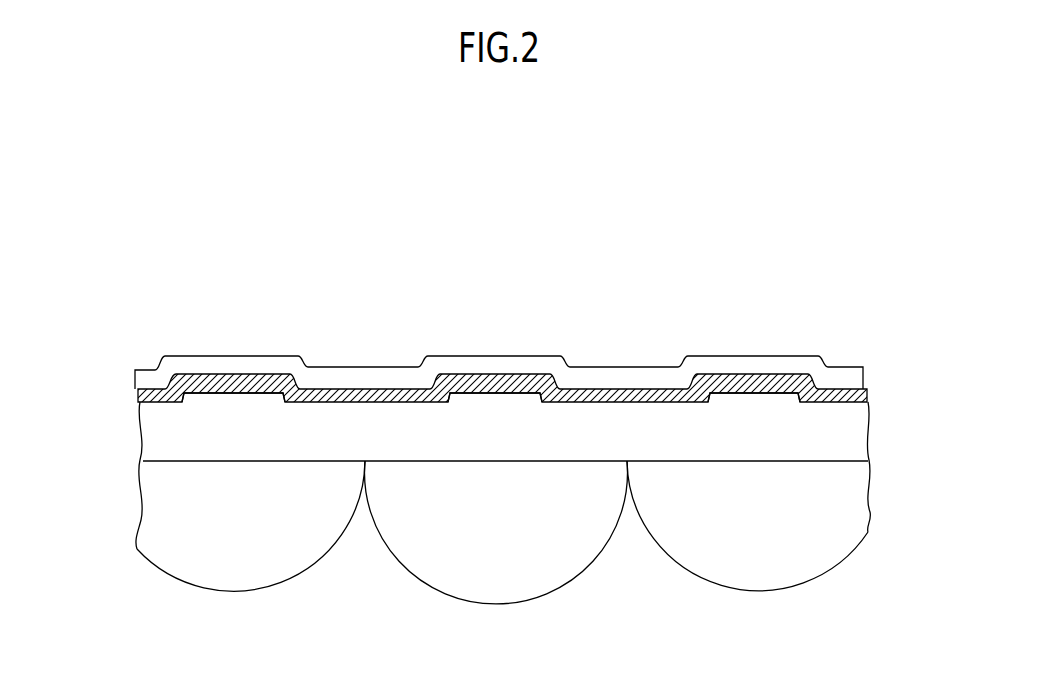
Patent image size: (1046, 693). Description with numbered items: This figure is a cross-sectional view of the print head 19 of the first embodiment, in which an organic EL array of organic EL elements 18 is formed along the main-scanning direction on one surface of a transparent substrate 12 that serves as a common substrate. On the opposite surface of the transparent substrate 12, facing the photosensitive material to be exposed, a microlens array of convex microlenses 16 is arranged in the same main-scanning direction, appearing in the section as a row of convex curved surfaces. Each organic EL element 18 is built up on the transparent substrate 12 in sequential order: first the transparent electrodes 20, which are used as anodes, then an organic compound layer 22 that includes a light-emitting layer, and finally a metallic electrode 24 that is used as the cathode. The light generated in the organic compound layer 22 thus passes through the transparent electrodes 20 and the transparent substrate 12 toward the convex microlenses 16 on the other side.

The transparent substrate 12 is at (143, 453).
The convex microlenses 16 is at (422, 555).
The organic EL element 18 is at (237, 354).
The print head 19 is at (494, 369).
The transparent electrodes 20 is at (255, 402).
The organic compound layer 22 is at (138, 399).
The metallic electrode 24 is at (133, 380).